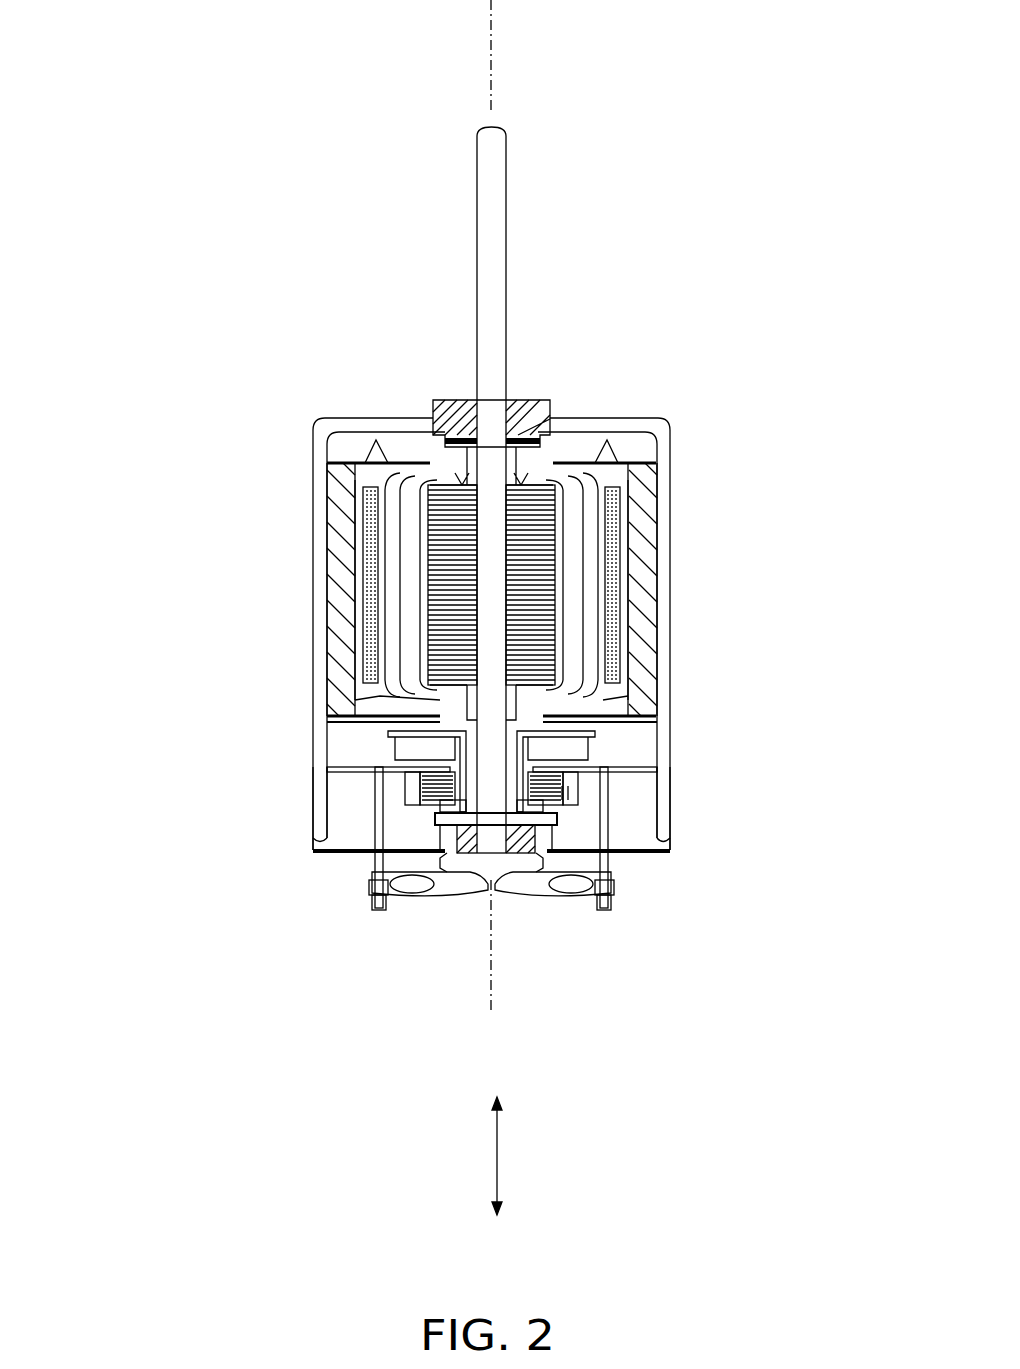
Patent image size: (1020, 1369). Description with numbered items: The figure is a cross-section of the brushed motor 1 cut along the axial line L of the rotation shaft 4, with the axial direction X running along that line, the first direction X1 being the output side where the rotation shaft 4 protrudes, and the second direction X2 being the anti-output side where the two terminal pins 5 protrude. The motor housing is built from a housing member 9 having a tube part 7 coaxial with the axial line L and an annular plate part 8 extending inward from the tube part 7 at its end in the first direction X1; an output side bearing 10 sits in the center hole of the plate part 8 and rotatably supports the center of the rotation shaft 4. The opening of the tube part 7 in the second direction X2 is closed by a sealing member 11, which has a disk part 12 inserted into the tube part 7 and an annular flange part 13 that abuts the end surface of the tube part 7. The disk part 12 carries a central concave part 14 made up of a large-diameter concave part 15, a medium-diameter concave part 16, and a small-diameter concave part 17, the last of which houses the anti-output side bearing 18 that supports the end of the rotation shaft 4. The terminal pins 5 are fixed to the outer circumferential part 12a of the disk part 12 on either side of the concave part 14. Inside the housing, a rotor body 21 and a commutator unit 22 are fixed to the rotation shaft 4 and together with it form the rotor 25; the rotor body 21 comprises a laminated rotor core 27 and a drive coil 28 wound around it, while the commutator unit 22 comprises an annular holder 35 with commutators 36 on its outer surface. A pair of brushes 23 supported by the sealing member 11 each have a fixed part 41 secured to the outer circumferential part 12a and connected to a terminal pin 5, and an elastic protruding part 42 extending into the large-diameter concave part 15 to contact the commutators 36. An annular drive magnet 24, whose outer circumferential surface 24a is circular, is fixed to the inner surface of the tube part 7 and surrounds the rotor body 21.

The motor 1 is at (262, 297).
The rotation shaft 4 is at (506, 272).
The terminal pins 5 is at (378, 875).
The tube part 7 is at (672, 600).
The plate part 8 is at (610, 416).
The housing member 9 is at (772, 477).
The output side bearing 10 is at (535, 398).
The sealing member 11 is at (772, 810).
The disk part 12 is at (645, 797).
The outer circumferential part 12a is at (643, 758).
The annular flange part 13 is at (668, 846).
The concave part 14 is at (660, 943).
The large-diameter concave part 15 is at (578, 782).
The medium-diameter concave part 16 is at (546, 826).
The small-diameter concave part 17 is at (497, 862).
The anti-output side bearing 18 is at (470, 843).
The rotor body 21 is at (425, 458).
The commutator unit 22 is at (447, 722).
The brushes 23 is at (322, 906).
The drive magnet 24 is at (330, 590).
The outer circumferential surface 24a is at (325, 555).
The rotor 25 is at (380, 695).
The rotor core 27 is at (430, 515).
The drive coil 28 is at (438, 463).
The holder 35 is at (440, 748).
The commutators 36 is at (560, 792).
The fixed part 41 is at (372, 790).
The protruding part 42 is at (423, 812).
The axial line L is at (490, 32).
The axial direction X is at (498, 1150).
The first direction X1 is at (499, 1079).
The second direction X2 is at (499, 1229).